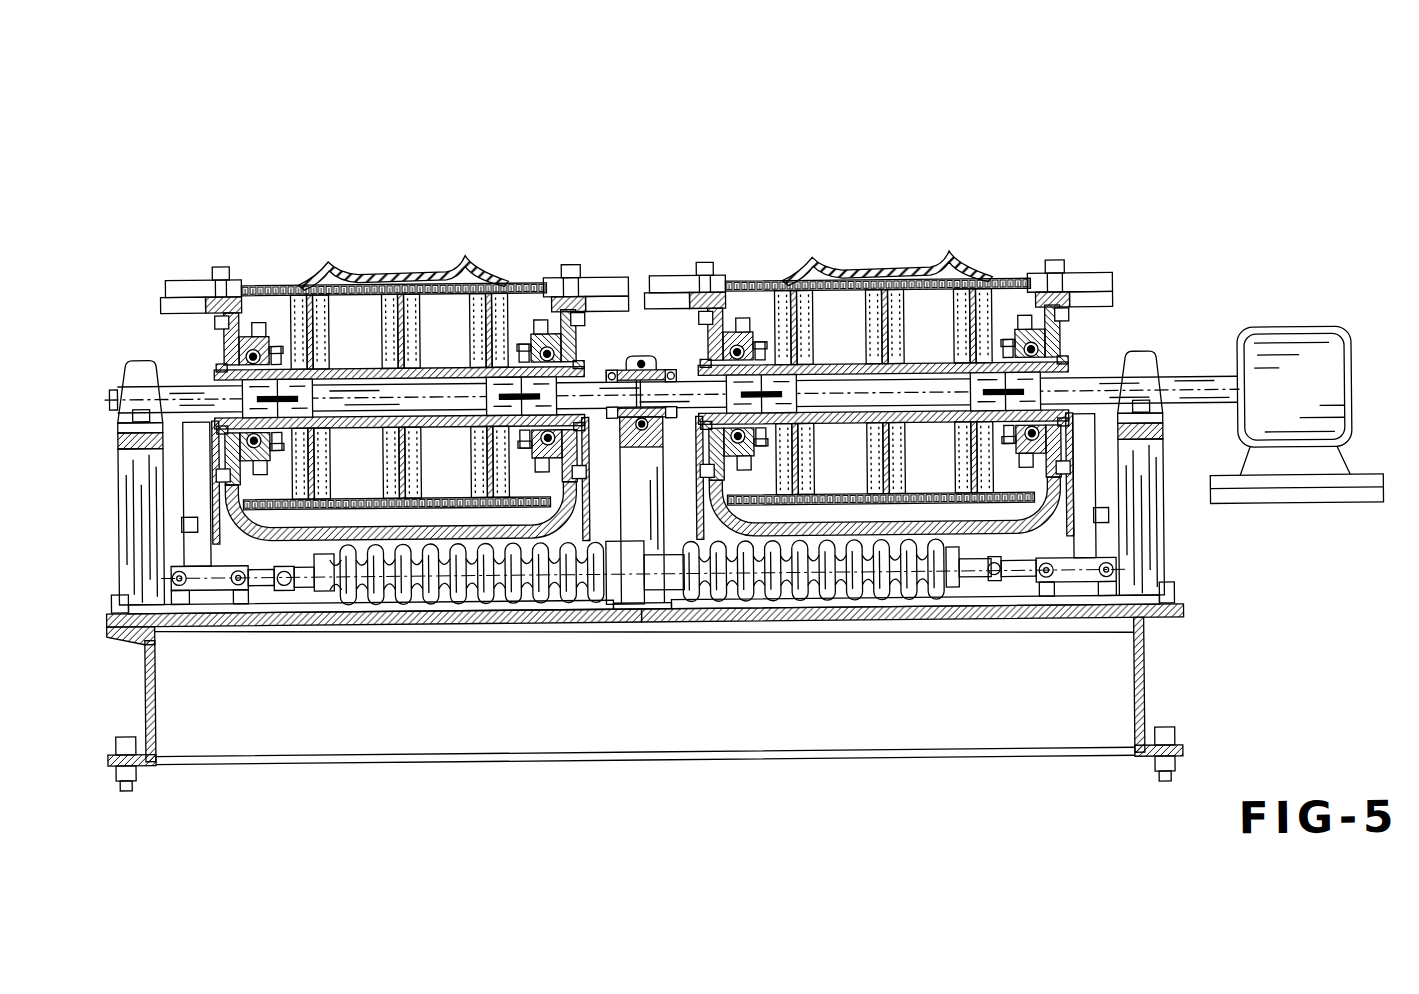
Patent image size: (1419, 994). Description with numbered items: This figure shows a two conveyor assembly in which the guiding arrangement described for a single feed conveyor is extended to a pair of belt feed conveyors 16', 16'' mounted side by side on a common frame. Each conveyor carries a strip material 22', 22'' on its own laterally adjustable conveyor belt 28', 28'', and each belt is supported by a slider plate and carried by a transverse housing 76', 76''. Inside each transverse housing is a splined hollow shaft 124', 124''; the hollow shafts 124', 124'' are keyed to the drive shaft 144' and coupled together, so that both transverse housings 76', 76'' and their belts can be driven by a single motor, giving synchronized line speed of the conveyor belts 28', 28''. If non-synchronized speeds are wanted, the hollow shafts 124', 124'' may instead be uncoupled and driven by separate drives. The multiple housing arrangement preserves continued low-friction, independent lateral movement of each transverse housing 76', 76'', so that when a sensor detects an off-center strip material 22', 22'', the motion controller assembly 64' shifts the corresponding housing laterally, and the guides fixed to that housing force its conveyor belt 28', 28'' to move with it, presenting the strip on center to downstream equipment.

The motion controller assembly 64' is at (713, 445).
The drive shaft 144' is at (642, 359).
The belt feed conveyor 16' is at (375, 718).
The belt feed conveyor 16'' is at (914, 713).
The strip material 22' is at (403, 242).
The strip material 22'' is at (887, 240).
The hollow shaft 124' is at (399, 324).
The hollow shaft 124'' is at (883, 321).
The conveyor belt 28' is at (212, 265).
The conveyor belt 28'' is at (701, 261).
The transverse housing 76' is at (320, 489).
The transverse housing 76'' is at (968, 481).